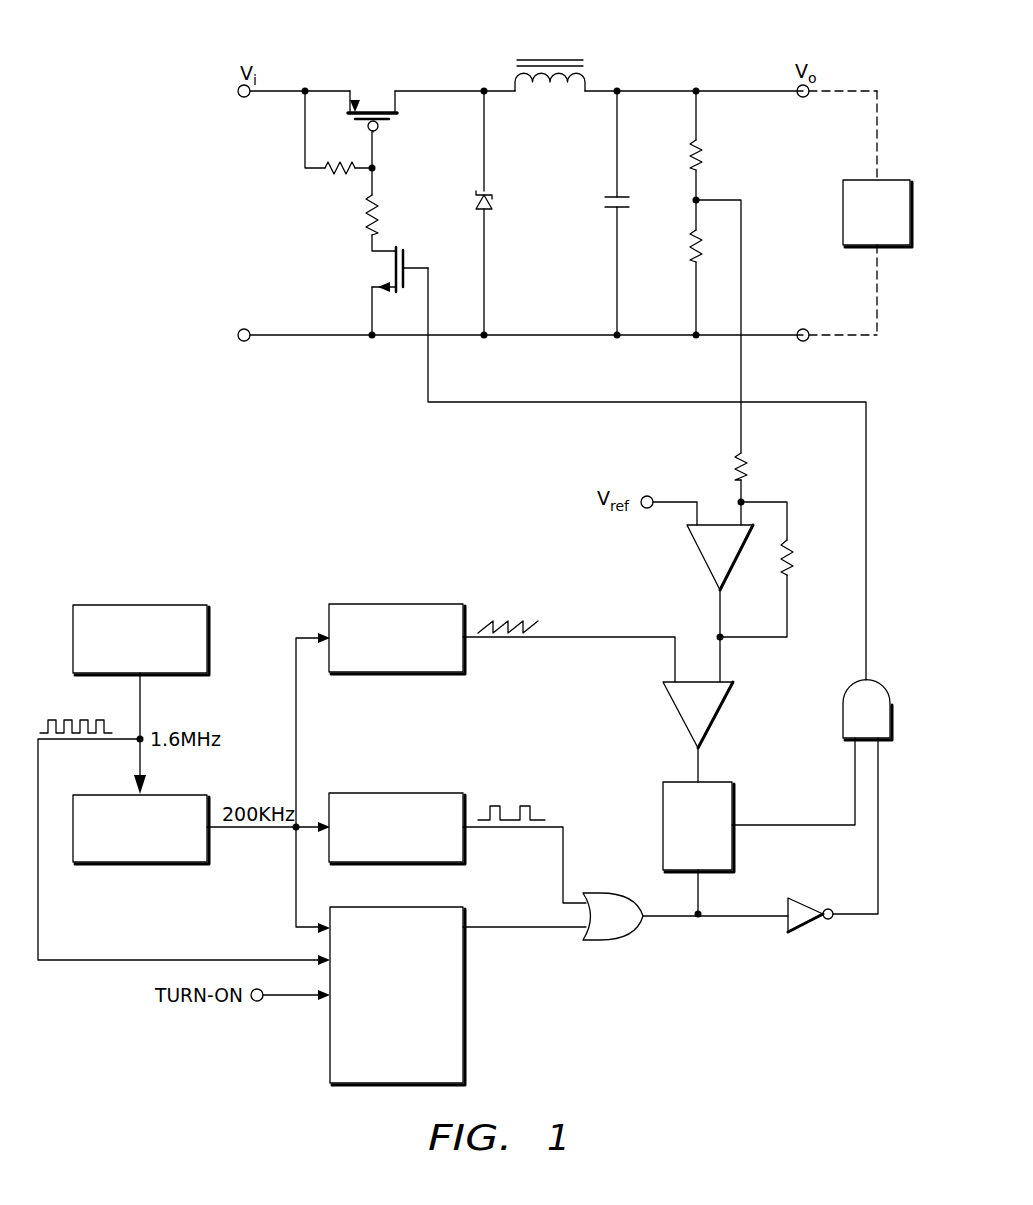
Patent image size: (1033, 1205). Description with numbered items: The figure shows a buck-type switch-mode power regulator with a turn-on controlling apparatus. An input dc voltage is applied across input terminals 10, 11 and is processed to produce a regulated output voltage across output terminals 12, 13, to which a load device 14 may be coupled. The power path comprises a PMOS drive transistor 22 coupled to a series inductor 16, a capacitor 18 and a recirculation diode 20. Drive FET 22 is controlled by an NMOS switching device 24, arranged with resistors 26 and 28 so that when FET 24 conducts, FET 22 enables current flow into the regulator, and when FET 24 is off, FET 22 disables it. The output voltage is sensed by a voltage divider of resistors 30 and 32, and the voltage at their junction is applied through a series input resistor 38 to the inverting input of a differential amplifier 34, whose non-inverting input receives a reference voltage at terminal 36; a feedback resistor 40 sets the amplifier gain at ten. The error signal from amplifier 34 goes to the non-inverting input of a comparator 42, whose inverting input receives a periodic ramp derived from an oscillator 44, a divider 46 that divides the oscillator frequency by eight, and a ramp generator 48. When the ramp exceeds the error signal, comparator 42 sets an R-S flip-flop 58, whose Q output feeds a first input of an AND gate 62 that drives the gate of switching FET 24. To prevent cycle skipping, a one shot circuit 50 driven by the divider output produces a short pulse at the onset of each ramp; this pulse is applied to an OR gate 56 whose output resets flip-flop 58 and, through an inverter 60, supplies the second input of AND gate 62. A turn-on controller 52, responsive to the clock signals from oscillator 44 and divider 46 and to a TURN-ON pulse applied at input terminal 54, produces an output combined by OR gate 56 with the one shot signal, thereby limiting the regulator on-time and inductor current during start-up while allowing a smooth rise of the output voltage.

The input terminal 10 is at (241, 98).
The input terminal 11 is at (244, 328).
The output terminal 12 is at (803, 98).
The output terminal 13 is at (806, 328).
The load device 14 is at (890, 178).
The series inductor 16 is at (562, 57).
The capacitor 18 is at (610, 212).
The recirculation diode 20 is at (493, 199).
The drive transistor 22 is at (370, 100).
The switching device 24 is at (382, 268).
The resistor 26 is at (337, 176).
The resistor 28 is at (380, 217).
The resistor 30 is at (704, 150).
The resistor 32 is at (688, 250).
The differential amplifier 34 is at (698, 553).
The reference voltage terminal 36 is at (645, 509).
The series input resistor 38 is at (749, 462).
The feedback resistor 40 is at (795, 562).
The comparator 42 is at (676, 714).
The oscillator 44 is at (138, 603).
The divider 46 is at (140, 864).
The ramp generator 48 is at (396, 603).
The one shot circuit 50 is at (396, 792).
The turn-on controller 52 is at (466, 1032).
The input terminal 54 is at (258, 1002).
The OR gate 56 is at (600, 893).
The R-S flip-flop 58 is at (735, 800).
The inverter 60 is at (812, 905).
The AND gate 62 is at (843, 696).